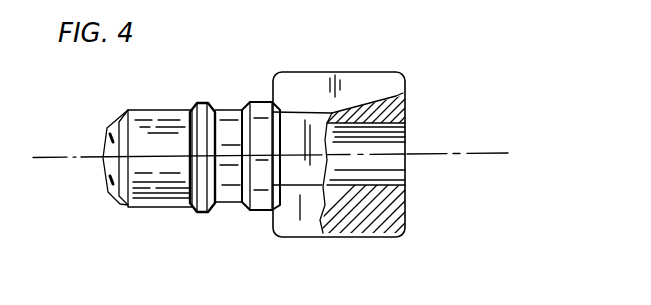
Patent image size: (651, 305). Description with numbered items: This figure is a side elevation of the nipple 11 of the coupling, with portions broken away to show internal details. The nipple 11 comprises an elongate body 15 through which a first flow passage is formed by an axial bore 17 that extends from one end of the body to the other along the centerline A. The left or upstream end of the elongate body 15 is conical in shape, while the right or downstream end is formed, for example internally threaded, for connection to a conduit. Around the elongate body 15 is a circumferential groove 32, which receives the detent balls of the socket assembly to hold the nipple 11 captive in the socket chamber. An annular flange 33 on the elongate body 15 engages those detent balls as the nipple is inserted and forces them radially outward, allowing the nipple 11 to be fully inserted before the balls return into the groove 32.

The nipple 11 is at (380, 132).
The elongate body 15 is at (243, 210).
The axial bore 17 is at (383, 147).
The circumferential groove 32 is at (230, 107).
The annular flange 33 is at (192, 213).
The centerline A is at (500, 150).